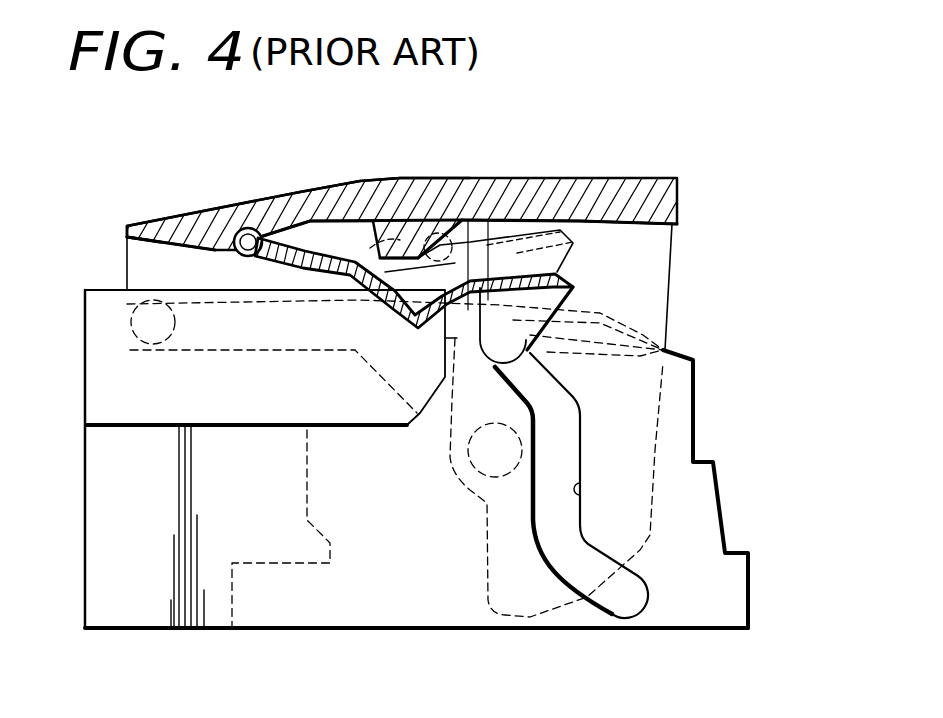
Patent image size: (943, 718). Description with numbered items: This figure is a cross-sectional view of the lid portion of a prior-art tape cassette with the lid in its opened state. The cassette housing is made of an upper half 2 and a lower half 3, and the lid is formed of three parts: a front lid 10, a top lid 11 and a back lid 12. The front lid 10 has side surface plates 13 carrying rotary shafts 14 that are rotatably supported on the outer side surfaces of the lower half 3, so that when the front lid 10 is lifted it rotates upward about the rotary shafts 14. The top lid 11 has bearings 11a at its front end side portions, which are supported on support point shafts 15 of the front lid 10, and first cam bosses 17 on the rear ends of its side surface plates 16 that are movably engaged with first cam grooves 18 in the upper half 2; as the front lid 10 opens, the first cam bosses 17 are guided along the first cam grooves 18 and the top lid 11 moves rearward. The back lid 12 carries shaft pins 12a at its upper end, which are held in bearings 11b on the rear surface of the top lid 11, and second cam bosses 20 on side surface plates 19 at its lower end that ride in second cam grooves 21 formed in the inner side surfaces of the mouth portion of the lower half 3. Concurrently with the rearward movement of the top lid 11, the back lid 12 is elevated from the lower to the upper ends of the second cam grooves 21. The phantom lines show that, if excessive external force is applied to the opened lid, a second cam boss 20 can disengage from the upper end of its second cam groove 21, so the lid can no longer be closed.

The upper half 2 is at (98, 381).
The lower half 3 is at (158, 607).
The front lid 10 is at (603, 178).
The top lid 11 is at (298, 191).
The bearing 11a is at (405, 184).
The bearing 11b is at (183, 224).
The back lid 12 is at (487, 227).
The shaft pin 12a is at (247, 235).
The side surface plate 13 is at (673, 243).
The rotary shaft 14 is at (483, 460).
The support point shaft 15 is at (428, 232).
The side surface plate 16 is at (127, 252).
The first cam boss 17 is at (127, 315).
The first cam groove 18 is at (258, 350).
The side surface plate 19 is at (565, 300).
The second cam boss 20 is at (665, 332).
The second cam groove 21 is at (580, 493).